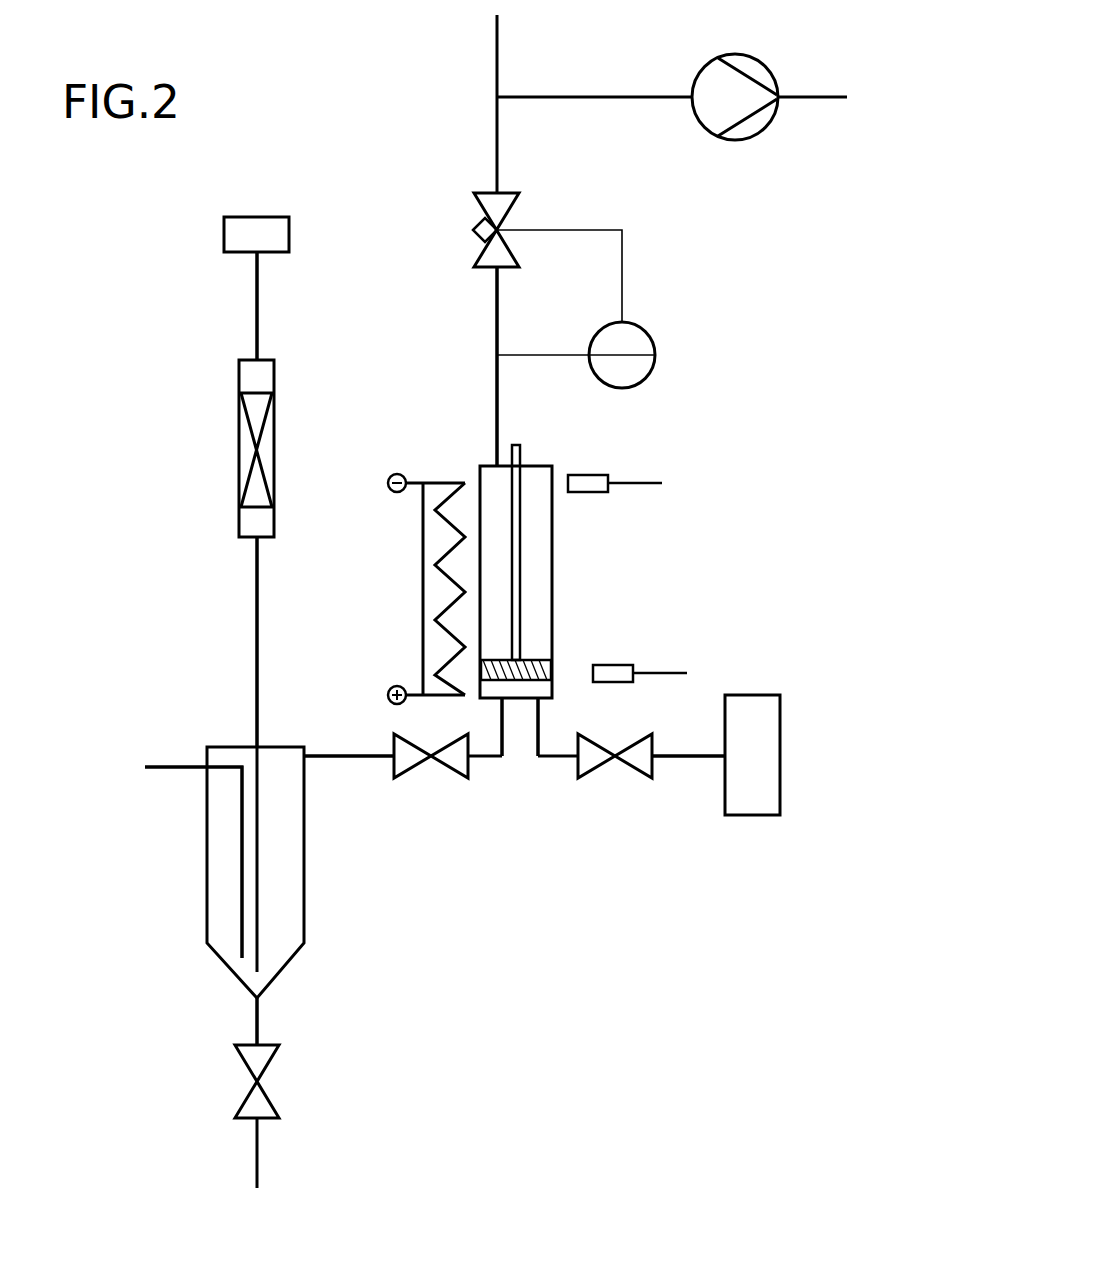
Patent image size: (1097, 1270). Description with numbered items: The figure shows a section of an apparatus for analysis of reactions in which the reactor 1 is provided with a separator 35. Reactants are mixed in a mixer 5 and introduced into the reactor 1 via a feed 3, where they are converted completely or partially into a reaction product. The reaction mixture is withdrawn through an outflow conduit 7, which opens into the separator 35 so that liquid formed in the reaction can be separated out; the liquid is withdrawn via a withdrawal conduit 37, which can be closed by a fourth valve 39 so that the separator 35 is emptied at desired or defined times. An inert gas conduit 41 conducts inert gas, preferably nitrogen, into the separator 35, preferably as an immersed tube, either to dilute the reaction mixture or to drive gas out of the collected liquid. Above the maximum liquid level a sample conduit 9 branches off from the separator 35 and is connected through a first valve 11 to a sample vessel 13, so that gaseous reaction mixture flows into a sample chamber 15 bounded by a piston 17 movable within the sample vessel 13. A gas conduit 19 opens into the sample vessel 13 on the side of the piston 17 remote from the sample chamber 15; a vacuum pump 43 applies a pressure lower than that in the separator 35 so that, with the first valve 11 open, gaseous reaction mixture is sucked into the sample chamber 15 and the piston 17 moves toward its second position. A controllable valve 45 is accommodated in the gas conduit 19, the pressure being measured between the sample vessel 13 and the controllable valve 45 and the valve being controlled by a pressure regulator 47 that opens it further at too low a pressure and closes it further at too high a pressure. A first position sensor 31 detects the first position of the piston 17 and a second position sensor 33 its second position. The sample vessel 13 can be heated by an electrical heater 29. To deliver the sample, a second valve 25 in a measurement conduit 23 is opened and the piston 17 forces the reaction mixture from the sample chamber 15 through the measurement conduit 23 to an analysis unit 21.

The reactor 1 is at (238, 460).
The feed 3 is at (257, 293).
The mixer 5 is at (245, 217).
The outflow conduit 7 is at (255, 615).
The sample conduit 9 is at (340, 756).
The first valve 11 is at (418, 765).
The sample vessel 13 is at (552, 575).
The sample chamber 15 is at (517, 698).
The piston 17 is at (550, 665).
The gas conduit 19 is at (497, 402).
The analysis unit 21 is at (780, 732).
The measurement conduit 23 is at (687, 757).
The second valve 25 is at (597, 765).
The electrical heater 29 is at (435, 482).
The first position sensor 31 is at (660, 673).
The second position sensor 33 is at (633, 483).
The separator 35 is at (207, 888).
The withdrawal conduit 37 is at (257, 1015).
The fourth valve 39 is at (272, 1107).
The inert gas conduit 41 is at (168, 765).
The vacuum pump 43 is at (763, 125).
The controllable valve 45 is at (473, 207).
The pressure regulator 47 is at (655, 365).